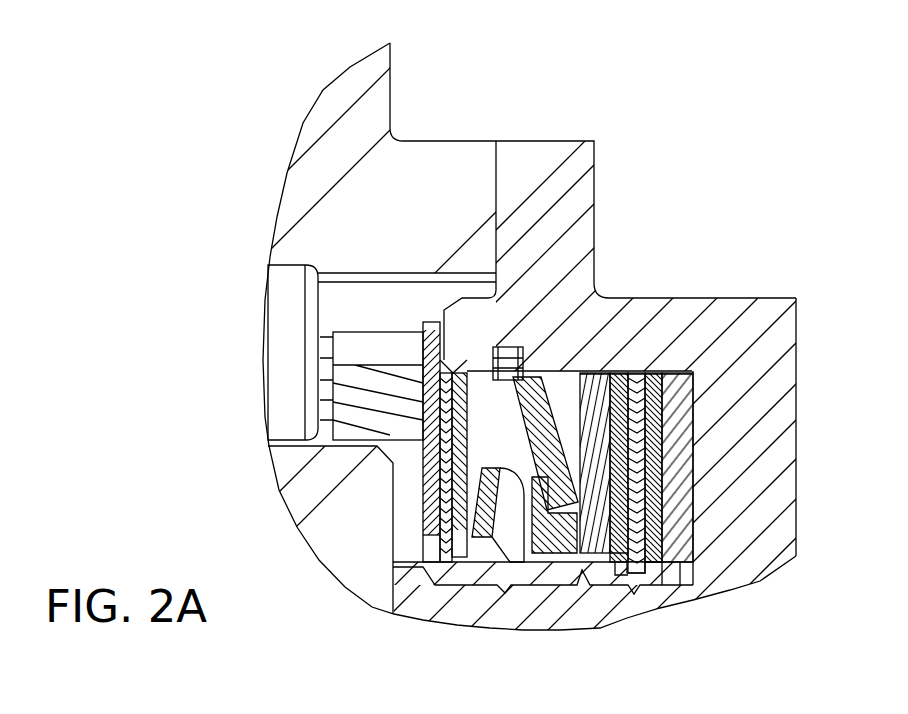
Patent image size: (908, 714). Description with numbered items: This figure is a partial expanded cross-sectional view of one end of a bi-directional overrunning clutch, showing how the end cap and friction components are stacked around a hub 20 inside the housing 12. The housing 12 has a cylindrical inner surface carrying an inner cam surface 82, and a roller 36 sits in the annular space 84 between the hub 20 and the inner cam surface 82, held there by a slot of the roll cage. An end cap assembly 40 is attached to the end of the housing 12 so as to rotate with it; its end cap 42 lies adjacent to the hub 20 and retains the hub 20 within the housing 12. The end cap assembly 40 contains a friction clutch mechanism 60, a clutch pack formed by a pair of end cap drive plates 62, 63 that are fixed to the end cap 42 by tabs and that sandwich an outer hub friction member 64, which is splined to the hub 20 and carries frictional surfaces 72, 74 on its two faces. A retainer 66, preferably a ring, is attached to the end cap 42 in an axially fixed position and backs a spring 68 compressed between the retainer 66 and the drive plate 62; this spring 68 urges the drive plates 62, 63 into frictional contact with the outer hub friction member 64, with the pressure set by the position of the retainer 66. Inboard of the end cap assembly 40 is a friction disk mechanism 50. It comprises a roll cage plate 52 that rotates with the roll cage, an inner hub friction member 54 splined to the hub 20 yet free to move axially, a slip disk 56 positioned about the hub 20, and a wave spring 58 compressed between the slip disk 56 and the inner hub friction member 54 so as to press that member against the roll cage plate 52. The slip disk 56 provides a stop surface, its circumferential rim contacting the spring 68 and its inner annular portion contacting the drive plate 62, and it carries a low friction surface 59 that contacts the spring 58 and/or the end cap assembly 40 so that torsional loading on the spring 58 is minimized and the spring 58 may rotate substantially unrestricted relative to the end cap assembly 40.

The housing 12 is at (372, 108).
The hub 20 is at (667, 600).
The roller 36 is at (284, 323).
The end cap assembly 40 is at (764, 300).
The end cap 42 is at (772, 348).
The friction disk mechanism 50 is at (502, 598).
The roll cage plate 52 is at (433, 335).
The inner hub friction member 54 is at (467, 373).
The slip disk 56 is at (567, 547).
The spring 58 is at (483, 517).
The low friction surface 59 is at (520, 497).
The friction clutch mechanism 60 is at (632, 602).
The end cap drive plate 62 is at (595, 413).
The end cap drive plate 63 is at (683, 437).
The outer hub friction member 64 is at (637, 402).
The retainer 66 is at (500, 468).
The spring 68 is at (560, 392).
The frictional surface 72 is at (622, 553).
The frictional surface 74 is at (643, 567).
The inner cam surface 82 is at (372, 290).
The annular space 84 is at (412, 305).